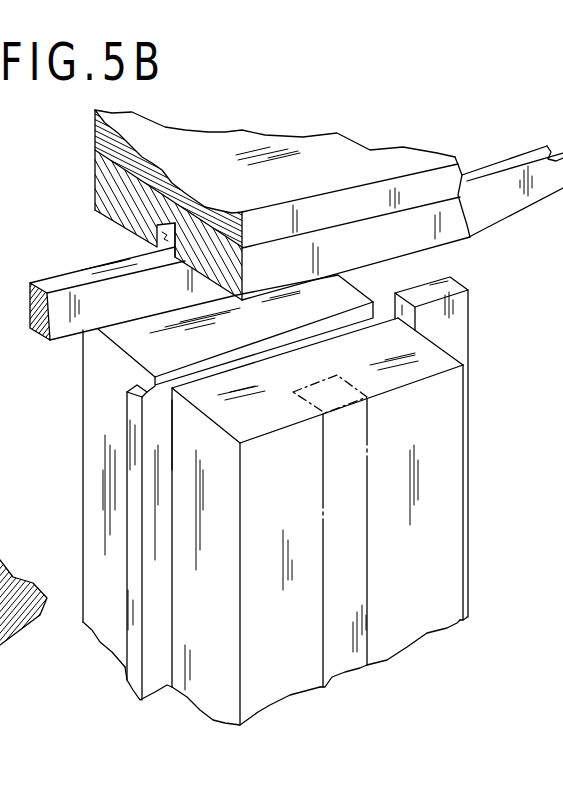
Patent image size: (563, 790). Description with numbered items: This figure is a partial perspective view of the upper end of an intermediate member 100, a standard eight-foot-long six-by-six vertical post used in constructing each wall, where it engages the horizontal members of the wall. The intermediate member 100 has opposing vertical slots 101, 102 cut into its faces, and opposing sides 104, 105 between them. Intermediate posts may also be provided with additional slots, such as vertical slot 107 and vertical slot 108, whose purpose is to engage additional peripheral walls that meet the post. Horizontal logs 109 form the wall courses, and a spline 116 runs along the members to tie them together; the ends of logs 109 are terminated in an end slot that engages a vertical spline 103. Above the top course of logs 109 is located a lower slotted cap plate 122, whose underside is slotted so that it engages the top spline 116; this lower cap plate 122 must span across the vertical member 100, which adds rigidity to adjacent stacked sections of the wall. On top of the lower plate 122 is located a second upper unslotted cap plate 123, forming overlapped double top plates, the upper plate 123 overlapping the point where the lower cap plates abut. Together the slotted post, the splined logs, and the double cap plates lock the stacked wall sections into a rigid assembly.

The intermediate member 100 is at (300, 505).
The vertical slot 101 is at (167, 432).
The vertical slot 102 is at (373, 318).
The vertical spline 103 is at (455, 337).
The side 104 is at (212, 617).
The side 105 is at (465, 460).
The vertical slot 107 is at (367, 560).
The vertical slot 108 is at (187, 471).
The log 109 is at (0, 700).
The spline 116 is at (62, 318).
The lower slotted cap plate 122 is at (455, 233).
The upper unslotted cap plate 123 is at (119, 147).